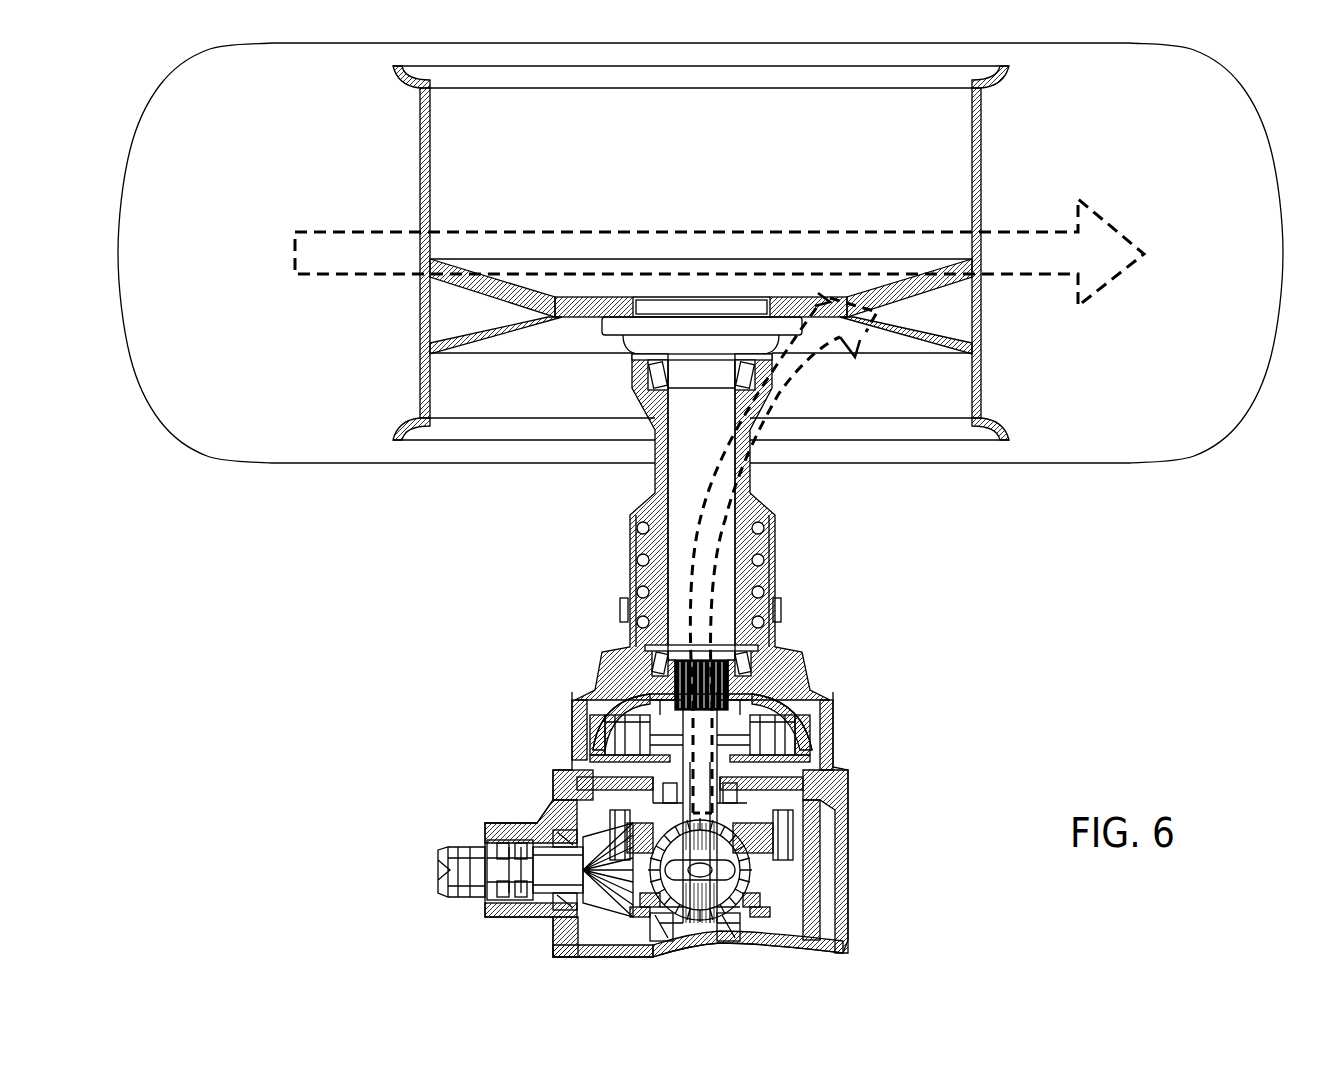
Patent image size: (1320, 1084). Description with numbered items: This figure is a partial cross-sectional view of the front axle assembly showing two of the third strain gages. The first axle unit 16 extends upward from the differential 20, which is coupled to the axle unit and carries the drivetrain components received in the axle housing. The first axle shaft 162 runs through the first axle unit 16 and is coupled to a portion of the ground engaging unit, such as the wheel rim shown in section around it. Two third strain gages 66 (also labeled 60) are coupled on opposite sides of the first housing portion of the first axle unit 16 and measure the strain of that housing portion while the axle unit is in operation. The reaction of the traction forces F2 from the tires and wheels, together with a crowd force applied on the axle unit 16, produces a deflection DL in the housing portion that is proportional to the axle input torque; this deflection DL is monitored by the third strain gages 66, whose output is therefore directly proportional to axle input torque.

The first axle unit 16 is at (578, 555).
The first axle shaft 162 is at (697, 485).
The sensor 60 is at (620, 606).
The third strain gage 66 is at (782, 608).
The differential 20 is at (890, 864).
The traction forces F2 is at (815, 228).
The deflection DL is at (796, 376).